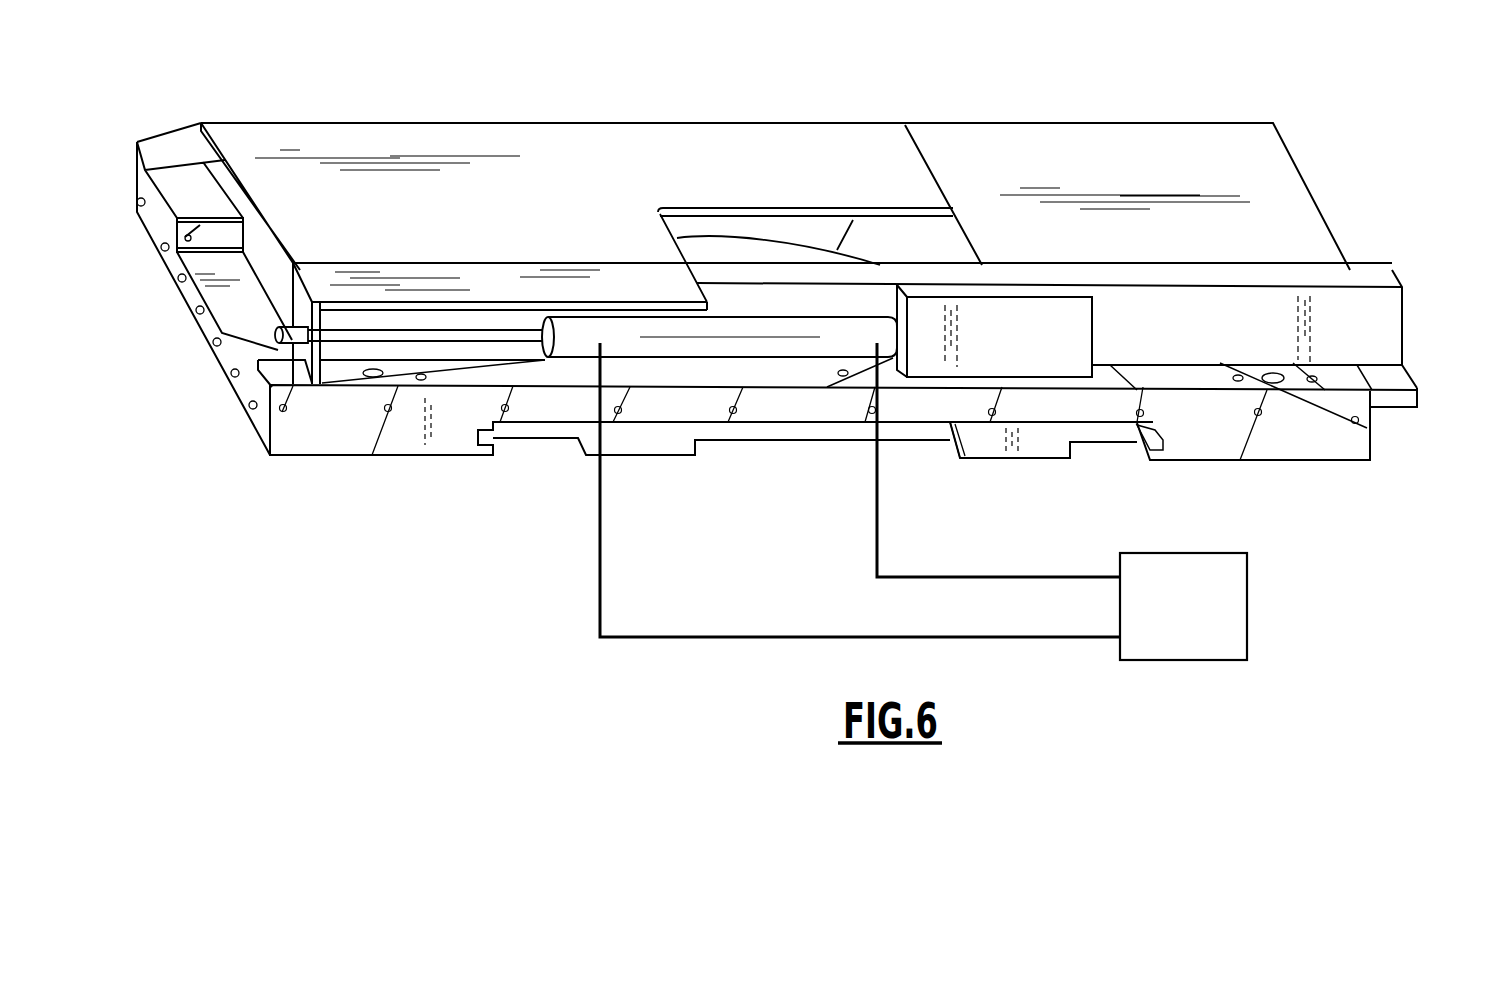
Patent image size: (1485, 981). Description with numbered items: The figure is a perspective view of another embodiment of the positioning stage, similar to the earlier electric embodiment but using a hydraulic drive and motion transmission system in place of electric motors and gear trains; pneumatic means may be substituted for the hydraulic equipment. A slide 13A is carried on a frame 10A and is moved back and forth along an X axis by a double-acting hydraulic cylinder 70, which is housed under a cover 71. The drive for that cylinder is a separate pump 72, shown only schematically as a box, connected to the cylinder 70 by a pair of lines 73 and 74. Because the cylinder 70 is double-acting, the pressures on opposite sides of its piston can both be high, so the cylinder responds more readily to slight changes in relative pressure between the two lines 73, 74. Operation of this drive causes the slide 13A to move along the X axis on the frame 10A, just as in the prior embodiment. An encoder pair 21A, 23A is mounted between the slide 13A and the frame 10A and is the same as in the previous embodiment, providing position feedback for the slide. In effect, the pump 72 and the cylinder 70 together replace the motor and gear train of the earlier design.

The frame 10A is at (320, 440).
The slide 13A is at (615, 177).
The encoder 21A is at (1367, 278).
The encoder 23A is at (1057, 350).
The double-acting hydraulic cylinder 70 is at (732, 345).
The cover 71 is at (377, 270).
The pump 72 is at (1202, 619).
The line 73 is at (880, 503).
The line 74 is at (603, 565).